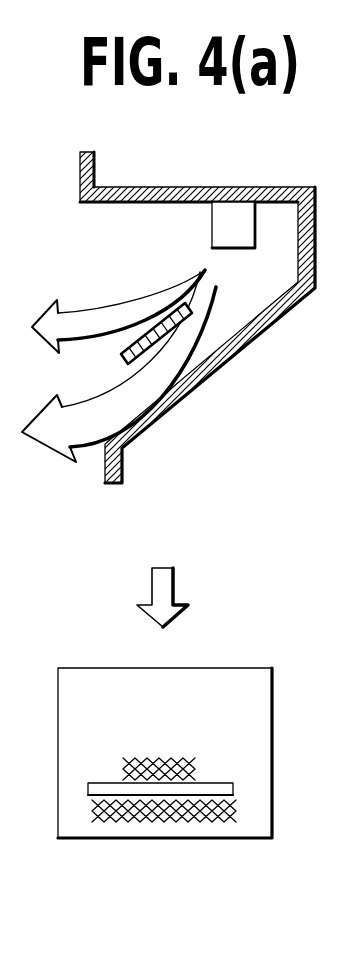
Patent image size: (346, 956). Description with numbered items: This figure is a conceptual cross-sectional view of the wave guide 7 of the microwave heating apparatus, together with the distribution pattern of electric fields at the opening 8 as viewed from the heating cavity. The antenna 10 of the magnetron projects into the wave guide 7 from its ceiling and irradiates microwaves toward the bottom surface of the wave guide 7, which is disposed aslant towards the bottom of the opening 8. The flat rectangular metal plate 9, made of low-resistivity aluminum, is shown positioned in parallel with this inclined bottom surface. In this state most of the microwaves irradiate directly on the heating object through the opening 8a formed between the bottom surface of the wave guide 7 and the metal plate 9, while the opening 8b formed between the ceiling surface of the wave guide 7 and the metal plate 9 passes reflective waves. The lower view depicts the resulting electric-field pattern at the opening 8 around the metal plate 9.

The wave guide 7 is at (265, 283).
The opening 8 is at (212, 687).
The opening 8a is at (67, 458).
The opening 8b is at (83, 312).
The metal plate 9 is at (163, 343).
The antenna 10 is at (234, 211).